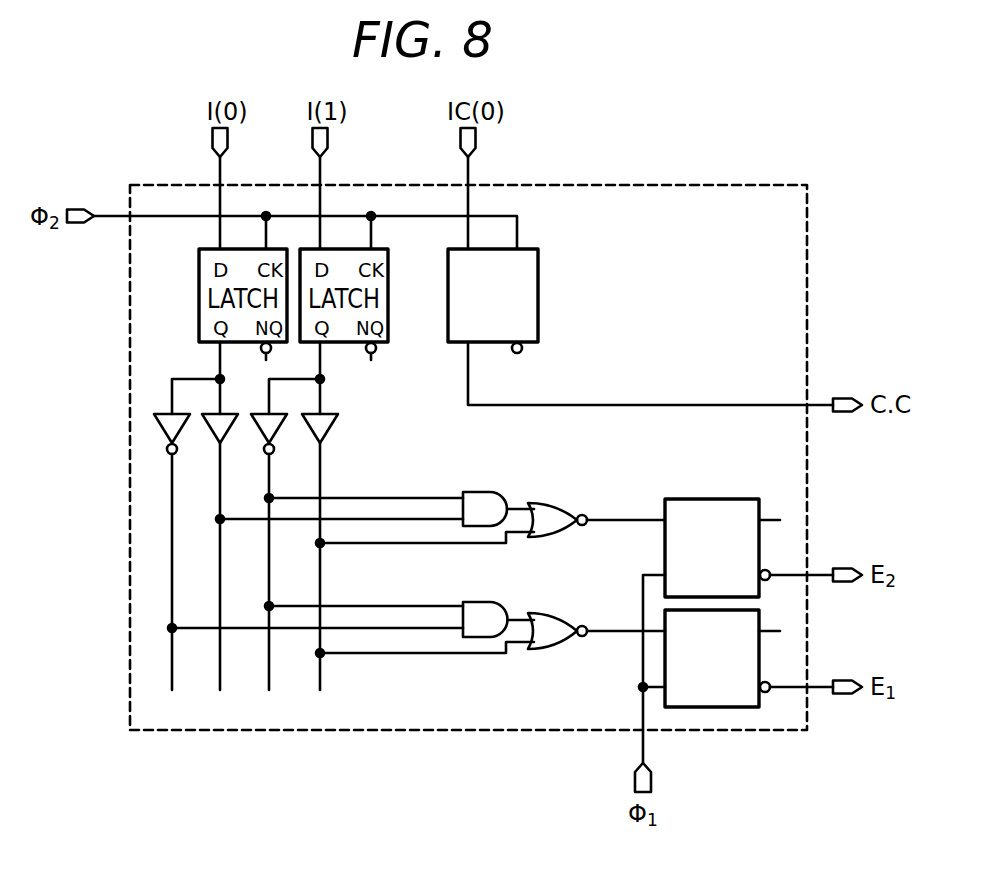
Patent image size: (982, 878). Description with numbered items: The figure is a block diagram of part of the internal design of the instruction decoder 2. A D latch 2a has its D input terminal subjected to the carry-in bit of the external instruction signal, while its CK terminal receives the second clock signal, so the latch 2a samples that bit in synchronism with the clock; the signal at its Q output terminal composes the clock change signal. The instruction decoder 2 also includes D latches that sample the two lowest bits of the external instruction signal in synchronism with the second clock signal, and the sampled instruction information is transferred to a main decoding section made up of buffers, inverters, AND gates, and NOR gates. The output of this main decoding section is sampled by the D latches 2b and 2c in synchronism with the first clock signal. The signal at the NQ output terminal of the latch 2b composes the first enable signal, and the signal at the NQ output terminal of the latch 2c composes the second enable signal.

The instruction decoder 2 is at (272, 730).
The D latch 2a is at (538, 300).
The D latch 2b is at (717, 707).
The D latch 2c is at (712, 499).